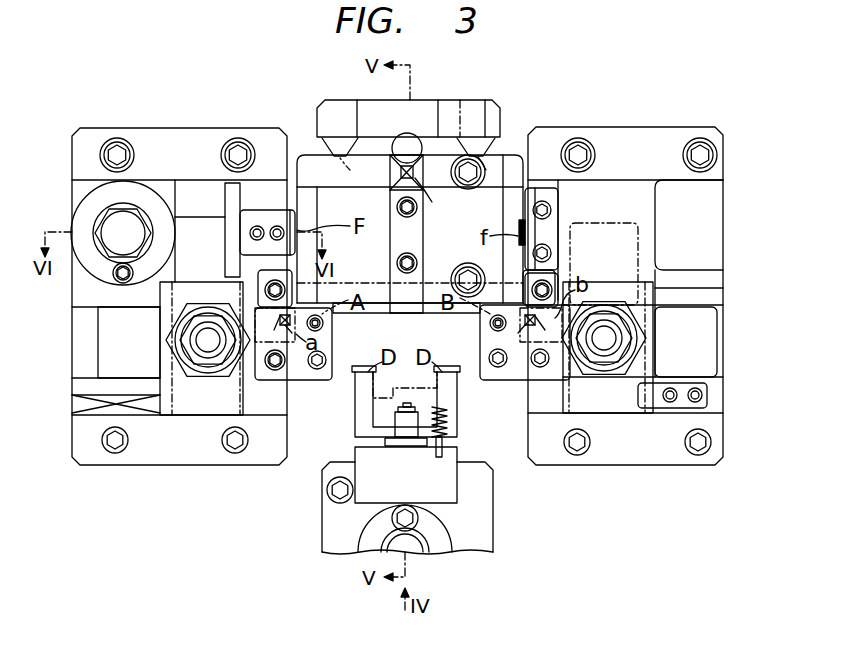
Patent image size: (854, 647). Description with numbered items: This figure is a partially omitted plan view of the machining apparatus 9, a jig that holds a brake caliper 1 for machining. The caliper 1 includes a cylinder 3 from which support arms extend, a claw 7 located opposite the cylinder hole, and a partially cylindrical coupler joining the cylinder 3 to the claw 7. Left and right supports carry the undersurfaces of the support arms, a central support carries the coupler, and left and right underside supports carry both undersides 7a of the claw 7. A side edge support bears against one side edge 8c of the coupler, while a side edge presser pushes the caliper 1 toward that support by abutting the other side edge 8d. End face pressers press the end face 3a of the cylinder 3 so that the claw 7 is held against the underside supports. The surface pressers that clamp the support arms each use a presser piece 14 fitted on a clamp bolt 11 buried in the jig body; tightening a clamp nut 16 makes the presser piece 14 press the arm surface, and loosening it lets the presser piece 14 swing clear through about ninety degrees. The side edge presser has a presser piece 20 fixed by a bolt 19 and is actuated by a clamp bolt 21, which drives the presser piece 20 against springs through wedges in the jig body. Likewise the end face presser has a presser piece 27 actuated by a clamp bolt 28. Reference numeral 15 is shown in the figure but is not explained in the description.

The caliper 1 is at (460, 330).
The cylinder 3 is at (350, 325).
The end face of the cylinder 3a is at (458, 402).
The claw 7 is at (412, 188).
The undersides of the claw 7a is at (426, 135).
The side edge of the coupler 8c is at (530, 198).
The other side edge of the coupler 8d is at (299, 216).
The machining apparatus 9 is at (540, 124).
The clamp bolt 11 is at (209, 352).
The presser piece 14 is at (318, 382).
The fixing screw 15 is at (490, 323).
The clamp nut 16 is at (240, 373).
The bolt 19 is at (280, 230).
The presser piece 20 is at (236, 262).
The clamp bolt 21 is at (114, 245).
The presser piece 27 is at (445, 448).
The clamp bolt 28 is at (428, 542).